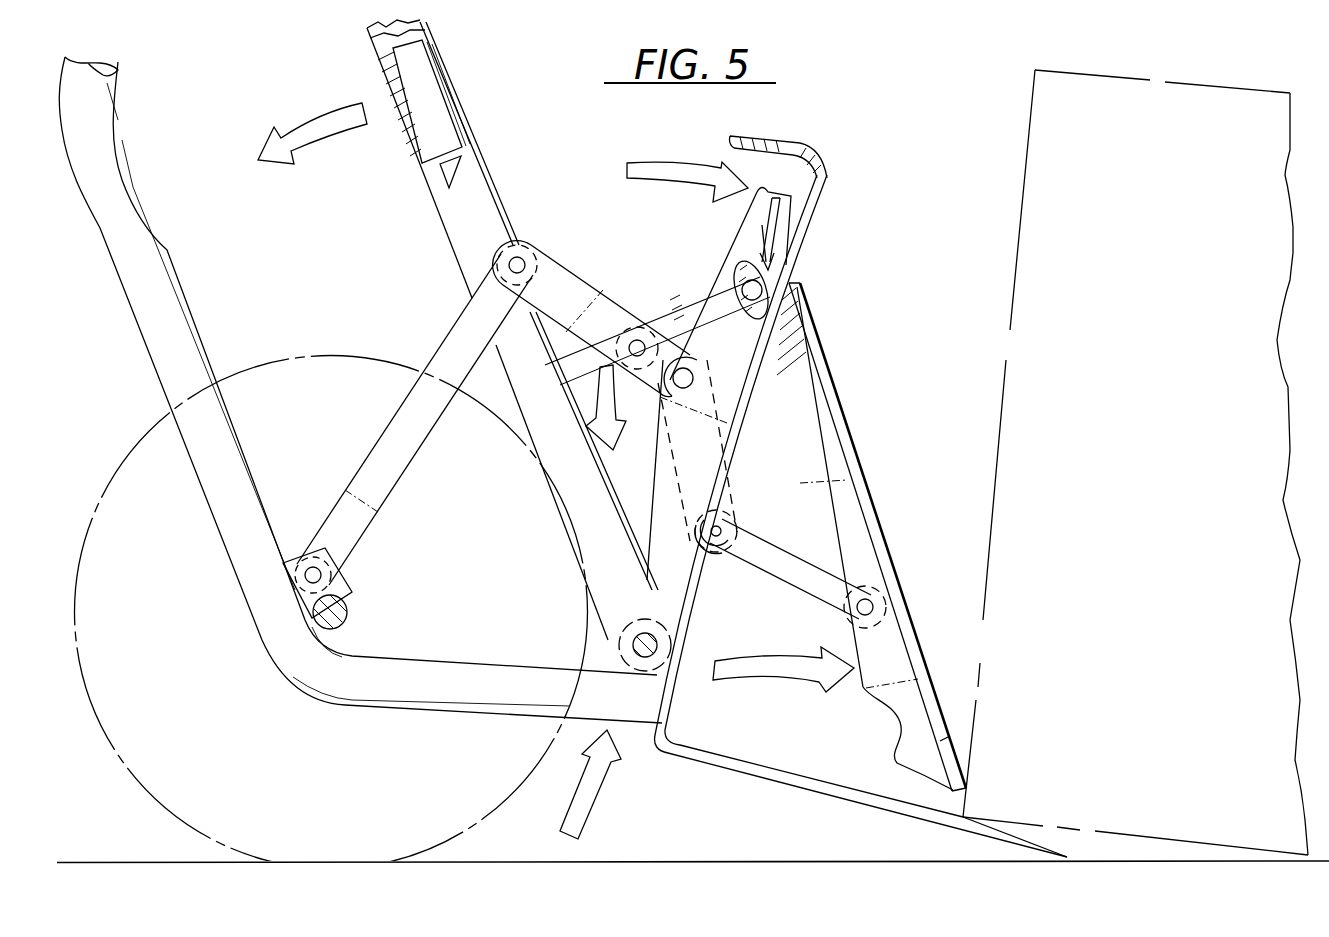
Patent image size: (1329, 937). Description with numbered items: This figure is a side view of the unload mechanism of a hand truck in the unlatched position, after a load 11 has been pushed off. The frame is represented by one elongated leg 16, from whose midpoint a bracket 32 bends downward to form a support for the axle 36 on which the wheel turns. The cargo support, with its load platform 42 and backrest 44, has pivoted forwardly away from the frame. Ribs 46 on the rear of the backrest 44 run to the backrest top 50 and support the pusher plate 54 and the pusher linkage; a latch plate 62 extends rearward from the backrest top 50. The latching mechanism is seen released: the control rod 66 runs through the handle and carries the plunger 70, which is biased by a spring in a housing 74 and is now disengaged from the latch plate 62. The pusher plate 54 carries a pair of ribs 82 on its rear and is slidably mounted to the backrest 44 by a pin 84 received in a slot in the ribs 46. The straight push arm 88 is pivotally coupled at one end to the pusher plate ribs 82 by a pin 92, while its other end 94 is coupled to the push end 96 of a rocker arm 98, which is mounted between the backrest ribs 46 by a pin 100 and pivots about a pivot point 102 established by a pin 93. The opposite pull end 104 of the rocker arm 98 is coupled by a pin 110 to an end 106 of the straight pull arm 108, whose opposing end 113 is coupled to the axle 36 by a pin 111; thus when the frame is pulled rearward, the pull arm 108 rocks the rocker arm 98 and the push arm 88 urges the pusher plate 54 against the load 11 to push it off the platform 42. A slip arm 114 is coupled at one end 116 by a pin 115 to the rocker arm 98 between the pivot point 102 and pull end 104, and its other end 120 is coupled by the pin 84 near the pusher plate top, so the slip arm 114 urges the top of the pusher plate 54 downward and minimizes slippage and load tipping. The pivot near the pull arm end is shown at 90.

The load 11 is at (1113, 614).
The elongated leg 16 is at (570, 523).
The bracket 32 is at (182, 312).
The axle 36 is at (350, 623).
The load platform 42 is at (787, 780).
The backrest 44 is at (805, 228).
The ribs 46 is at (730, 243).
The backrest top 50 is at (822, 160).
The pusher plate 54 is at (877, 530).
The latch plate 62 is at (760, 130).
The control rod 66 is at (393, 37).
The plunger 70 is at (462, 172).
The housing 74 is at (460, 122).
The ribs 82 is at (813, 440).
The pin 84 is at (763, 292).
The push arm 88 is at (810, 587).
The pivot 90 is at (877, 590).
The pin 92 is at (873, 607).
The pin 93 is at (657, 397).
The other end of push arm 94 is at (737, 523).
The push end 96 is at (737, 513).
The rocker arm 98 is at (607, 307).
The pin 100 is at (712, 540).
The pivot point 102 is at (697, 375).
The pull end 104 is at (550, 268).
The end of pull arm 106 is at (487, 287).
The pull arm 108 is at (452, 327).
The pin 110 is at (521, 266).
The pin 111 is at (320, 577).
The opposing end of pull arm 113 is at (305, 557).
The slip arm 114 is at (680, 313).
The pin 115 is at (640, 347).
The end of slip arm 116 is at (557, 368).
The other end of slip arm 120 is at (760, 262).